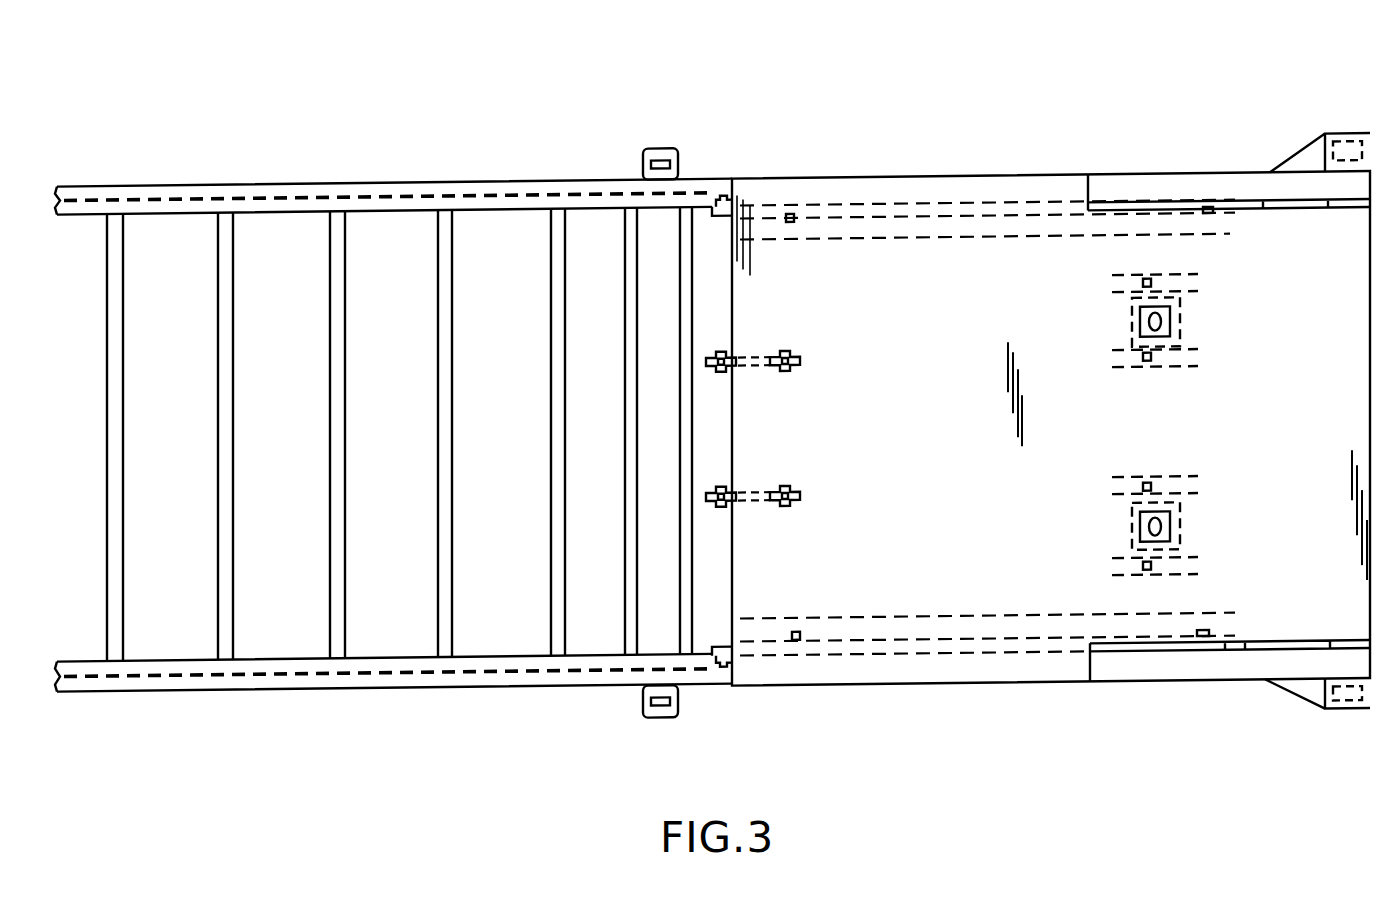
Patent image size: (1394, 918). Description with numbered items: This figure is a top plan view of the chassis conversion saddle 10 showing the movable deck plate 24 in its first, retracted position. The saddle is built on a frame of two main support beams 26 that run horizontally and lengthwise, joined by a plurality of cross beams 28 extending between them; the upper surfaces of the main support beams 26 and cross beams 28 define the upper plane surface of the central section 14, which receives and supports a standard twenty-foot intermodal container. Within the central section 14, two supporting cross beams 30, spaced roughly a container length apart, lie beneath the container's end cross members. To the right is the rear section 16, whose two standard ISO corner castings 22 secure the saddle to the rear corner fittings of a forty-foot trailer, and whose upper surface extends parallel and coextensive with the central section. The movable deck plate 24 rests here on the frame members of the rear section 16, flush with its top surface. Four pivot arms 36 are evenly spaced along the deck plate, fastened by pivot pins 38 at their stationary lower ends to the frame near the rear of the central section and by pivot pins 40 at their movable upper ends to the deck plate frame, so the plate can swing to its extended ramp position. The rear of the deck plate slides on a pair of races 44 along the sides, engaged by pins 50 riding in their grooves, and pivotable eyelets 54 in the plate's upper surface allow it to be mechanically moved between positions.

The chassis conversion saddle 10 is at (616, 88).
The central section 14 is at (305, 167).
The rear section 16 is at (957, 148).
The standard ISO corner castings 22 is at (1349, 141).
The movable deck plate 24 is at (930, 434).
The main support beams 26 is at (514, 183).
The cross beams 28 is at (438, 258).
The supporting cross beams 30 is at (633, 228).
The pivot arms 36 is at (765, 203).
The pivot pins 38 is at (722, 196).
The pivot pins 40 is at (792, 215).
The races 44 is at (1210, 212).
The pins 50 is at (1215, 214).
The pivotable eyelets 54 is at (1168, 327).